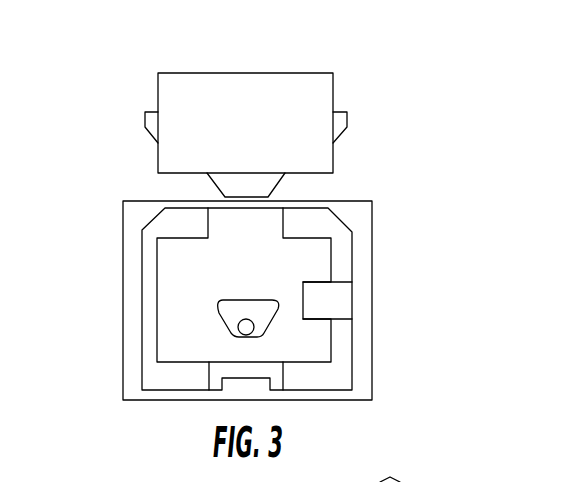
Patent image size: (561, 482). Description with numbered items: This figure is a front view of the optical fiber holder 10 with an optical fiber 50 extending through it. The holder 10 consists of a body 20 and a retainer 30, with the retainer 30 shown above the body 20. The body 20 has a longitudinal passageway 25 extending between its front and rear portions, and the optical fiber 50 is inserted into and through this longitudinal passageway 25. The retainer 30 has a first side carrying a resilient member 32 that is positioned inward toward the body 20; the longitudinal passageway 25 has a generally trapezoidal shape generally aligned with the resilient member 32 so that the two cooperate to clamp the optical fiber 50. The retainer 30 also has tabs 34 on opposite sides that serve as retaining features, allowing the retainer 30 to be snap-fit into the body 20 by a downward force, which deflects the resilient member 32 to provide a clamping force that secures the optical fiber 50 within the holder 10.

The optical fiber holder 10 is at (117, 75).
The body 20 is at (379, 342).
The longitudinal passageway 25 is at (213, 301).
The retainer 30 is at (244, 66).
The resilient member 32 is at (284, 188).
The tabs 34 is at (152, 130).
The optical fiber 50 is at (239, 331).